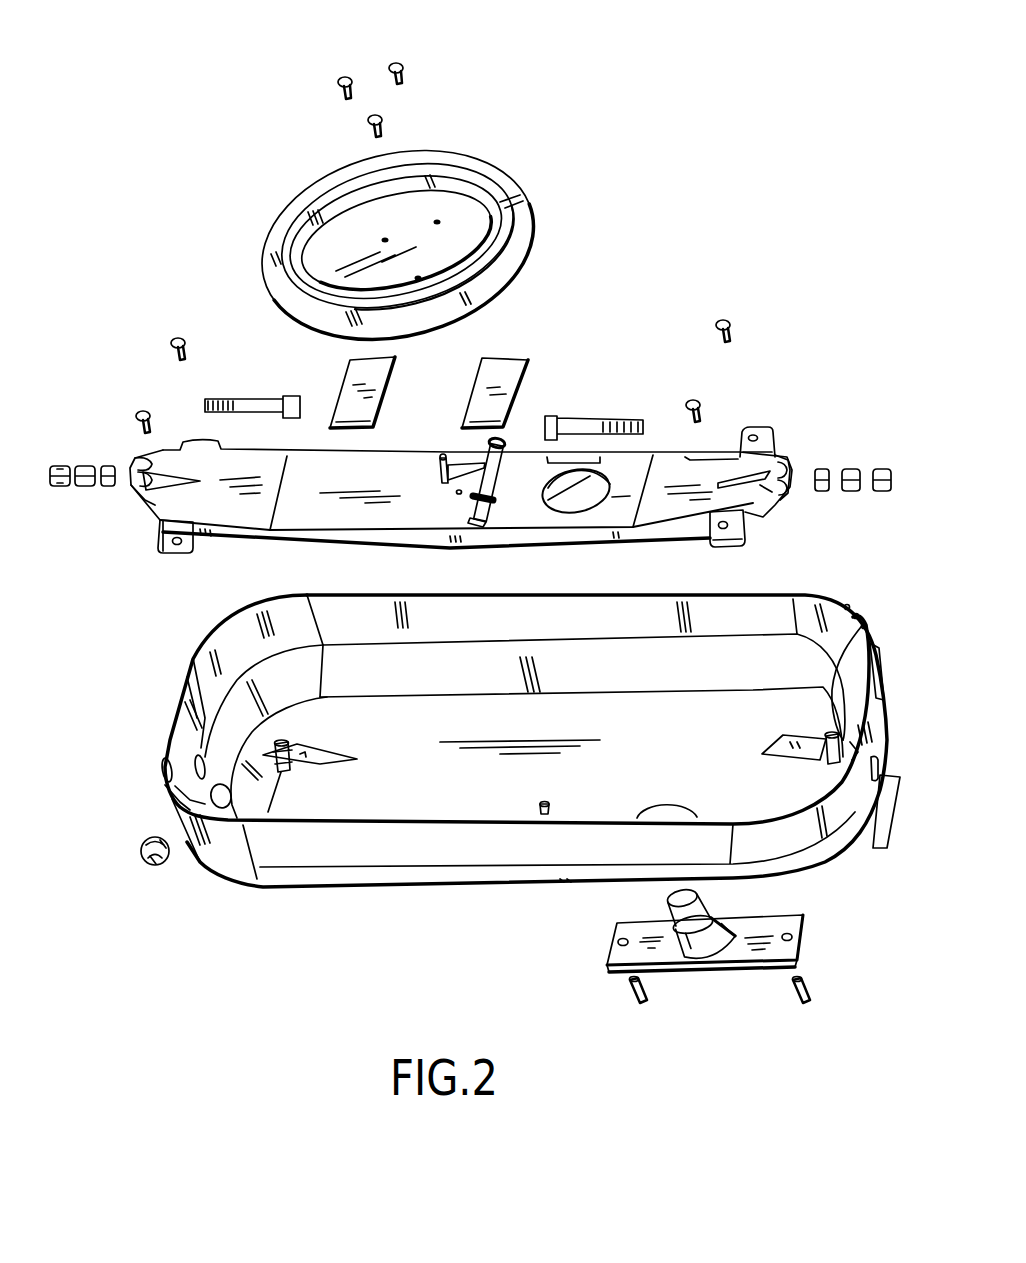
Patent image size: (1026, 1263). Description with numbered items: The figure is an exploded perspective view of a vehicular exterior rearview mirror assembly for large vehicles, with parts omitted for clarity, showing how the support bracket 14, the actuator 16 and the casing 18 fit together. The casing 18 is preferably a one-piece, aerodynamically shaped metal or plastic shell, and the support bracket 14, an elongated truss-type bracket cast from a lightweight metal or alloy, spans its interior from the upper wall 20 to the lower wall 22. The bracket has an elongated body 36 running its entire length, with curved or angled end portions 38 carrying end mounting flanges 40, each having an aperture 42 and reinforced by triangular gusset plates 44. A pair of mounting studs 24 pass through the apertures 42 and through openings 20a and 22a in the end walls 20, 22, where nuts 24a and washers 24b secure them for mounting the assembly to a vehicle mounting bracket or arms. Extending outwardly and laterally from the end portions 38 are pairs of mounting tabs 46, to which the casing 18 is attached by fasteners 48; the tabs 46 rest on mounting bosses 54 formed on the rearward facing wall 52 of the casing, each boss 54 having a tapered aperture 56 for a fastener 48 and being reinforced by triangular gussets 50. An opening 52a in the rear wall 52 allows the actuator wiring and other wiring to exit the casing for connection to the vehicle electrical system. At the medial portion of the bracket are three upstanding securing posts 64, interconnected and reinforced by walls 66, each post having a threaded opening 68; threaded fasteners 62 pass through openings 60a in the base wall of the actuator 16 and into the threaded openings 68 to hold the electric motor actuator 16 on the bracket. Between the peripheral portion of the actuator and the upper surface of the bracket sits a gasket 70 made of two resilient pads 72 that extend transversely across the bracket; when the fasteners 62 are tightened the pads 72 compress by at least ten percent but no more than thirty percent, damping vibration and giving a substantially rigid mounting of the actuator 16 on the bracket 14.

The support bracket 14 is at (455, 492).
The actuator 16 is at (533, 212).
The casing 18 is at (507, 757).
The upper wall 20 is at (870, 709).
The opening 20a is at (897, 778).
The lower wall 22 is at (198, 704).
The opening 22a is at (191, 742).
The mounting studs 24 is at (265, 397).
The nuts 24a is at (881, 467).
The washers 24b is at (824, 468).
The elongated body 36 is at (300, 537).
The curved end portions 38 is at (227, 540).
The end mounting flanges 40 is at (156, 467).
The aperture 42 is at (787, 488).
The gusset plates 44 is at (140, 494).
The mounting tabs 46 is at (173, 553).
The fasteners 48 is at (155, 410).
The gussets 50 is at (320, 750).
The rear wall 52 is at (465, 804).
The opening 52a is at (220, 809).
The mounting bosses 54 is at (286, 742).
The tapered aperture 56 is at (282, 742).
The openings 60a is at (438, 219).
The fasteners 62 is at (374, 116).
The securing posts 64 is at (499, 443).
The walls 66 is at (458, 474).
The threaded opening 68 is at (444, 454).
The gasket 70 is at (470, 347).
The resilient pads 72 is at (492, 384).